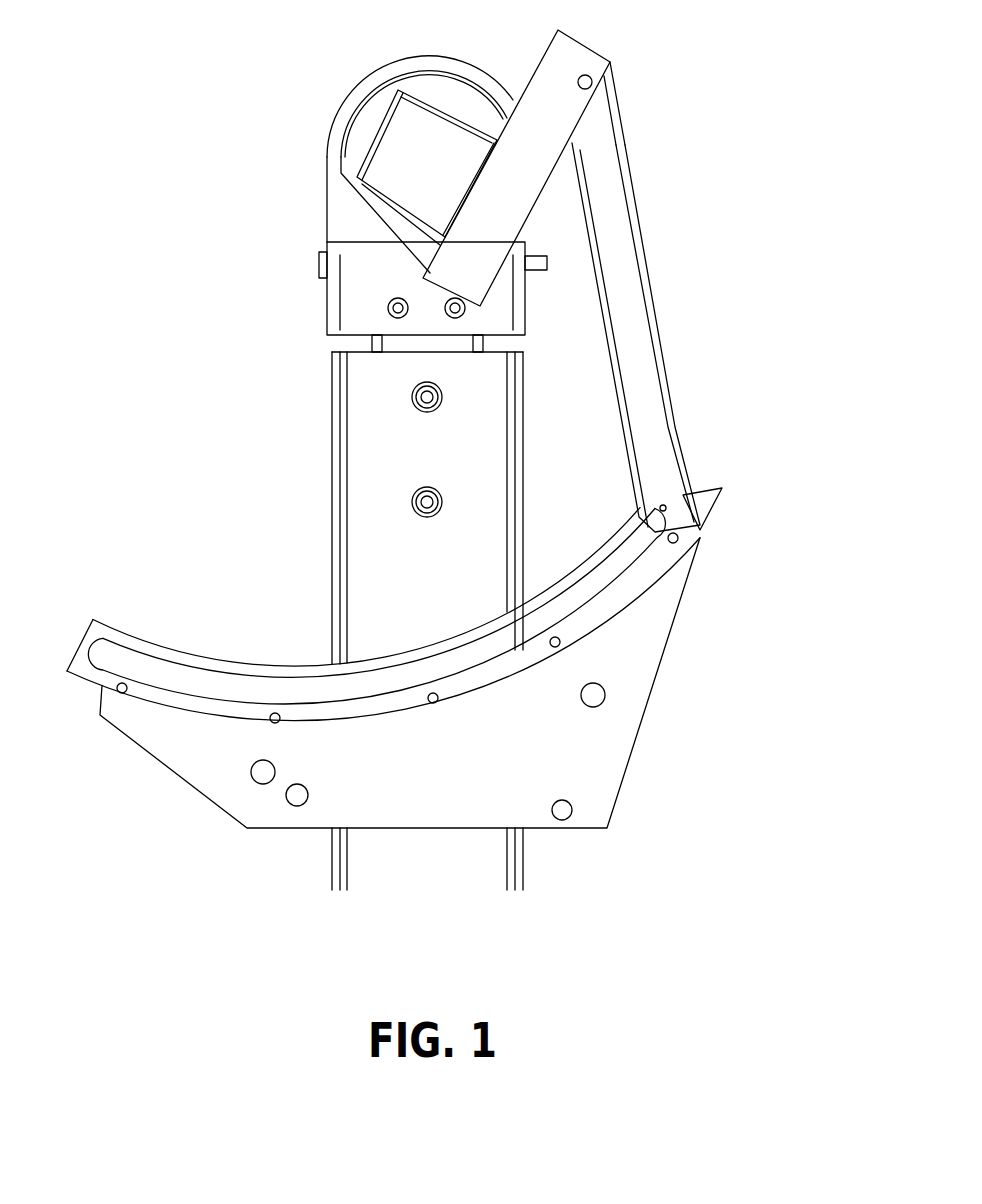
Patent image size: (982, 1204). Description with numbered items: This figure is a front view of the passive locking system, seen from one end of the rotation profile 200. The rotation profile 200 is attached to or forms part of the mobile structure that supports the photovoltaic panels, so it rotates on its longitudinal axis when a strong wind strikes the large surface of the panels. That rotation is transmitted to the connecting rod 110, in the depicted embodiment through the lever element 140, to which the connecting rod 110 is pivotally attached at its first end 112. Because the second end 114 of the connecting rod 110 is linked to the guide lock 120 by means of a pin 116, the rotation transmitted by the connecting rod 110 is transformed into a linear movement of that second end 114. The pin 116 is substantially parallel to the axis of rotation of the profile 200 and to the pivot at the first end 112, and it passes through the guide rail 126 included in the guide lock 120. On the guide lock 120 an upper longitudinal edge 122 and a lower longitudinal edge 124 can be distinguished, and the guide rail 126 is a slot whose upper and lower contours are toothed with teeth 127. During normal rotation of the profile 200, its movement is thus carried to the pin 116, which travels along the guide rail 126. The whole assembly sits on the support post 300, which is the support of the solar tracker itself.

The connecting rod 110 is at (648, 272).
The first end 112 is at (598, 108).
The second end 114 is at (688, 492).
The pin 116 is at (666, 510).
The guide lock 120 is at (378, 660).
The upper longitudinal edge 122 is at (163, 650).
The lower longitudinal edge 124 is at (158, 707).
The guide rail 126 is at (118, 667).
The teeth 127 is at (193, 672).
The lever element 140 is at (565, 65).
The rotation profile 200 is at (392, 162).
The support post 300 is at (382, 425).